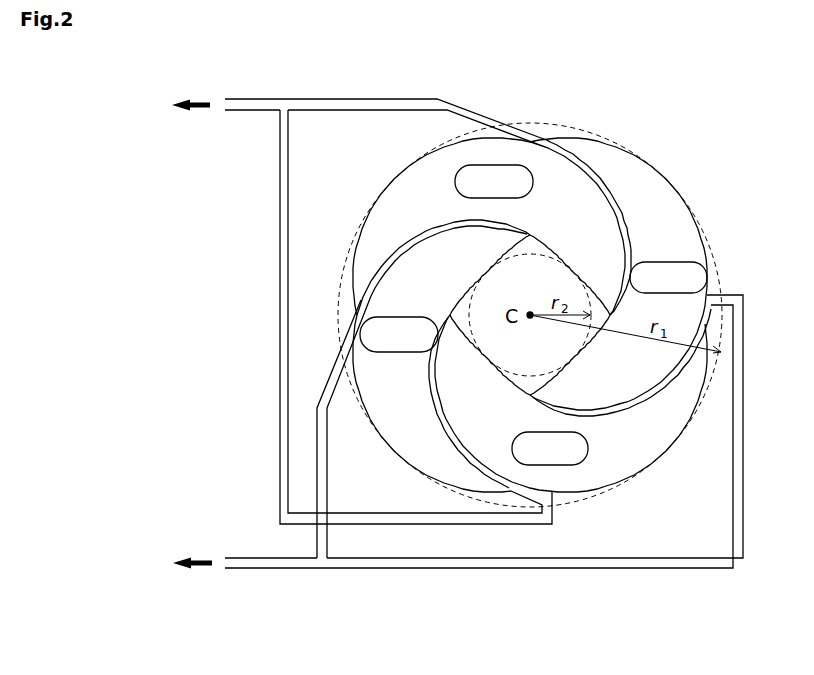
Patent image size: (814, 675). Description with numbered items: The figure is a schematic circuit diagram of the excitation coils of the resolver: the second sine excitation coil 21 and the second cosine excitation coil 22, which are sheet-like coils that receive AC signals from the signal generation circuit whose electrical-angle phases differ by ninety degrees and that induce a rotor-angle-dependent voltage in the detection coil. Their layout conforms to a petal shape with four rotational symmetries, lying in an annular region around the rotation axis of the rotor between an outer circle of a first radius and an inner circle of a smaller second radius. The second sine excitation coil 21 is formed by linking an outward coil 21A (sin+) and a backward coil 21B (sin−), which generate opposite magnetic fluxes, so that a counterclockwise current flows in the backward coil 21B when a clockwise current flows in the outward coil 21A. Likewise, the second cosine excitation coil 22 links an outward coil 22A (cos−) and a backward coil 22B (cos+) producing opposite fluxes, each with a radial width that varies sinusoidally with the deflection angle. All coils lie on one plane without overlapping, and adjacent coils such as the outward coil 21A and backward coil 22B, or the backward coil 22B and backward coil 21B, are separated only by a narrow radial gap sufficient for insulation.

The second sine excitation coil 21 is at (610, 589).
The outward coil 21A is at (384, 190).
The backward coil 21B is at (633, 477).
The second cosine excitation coil 22 is at (259, 366).
The outward coil 22A is at (427, 473).
The backward coil 22B is at (667, 173).